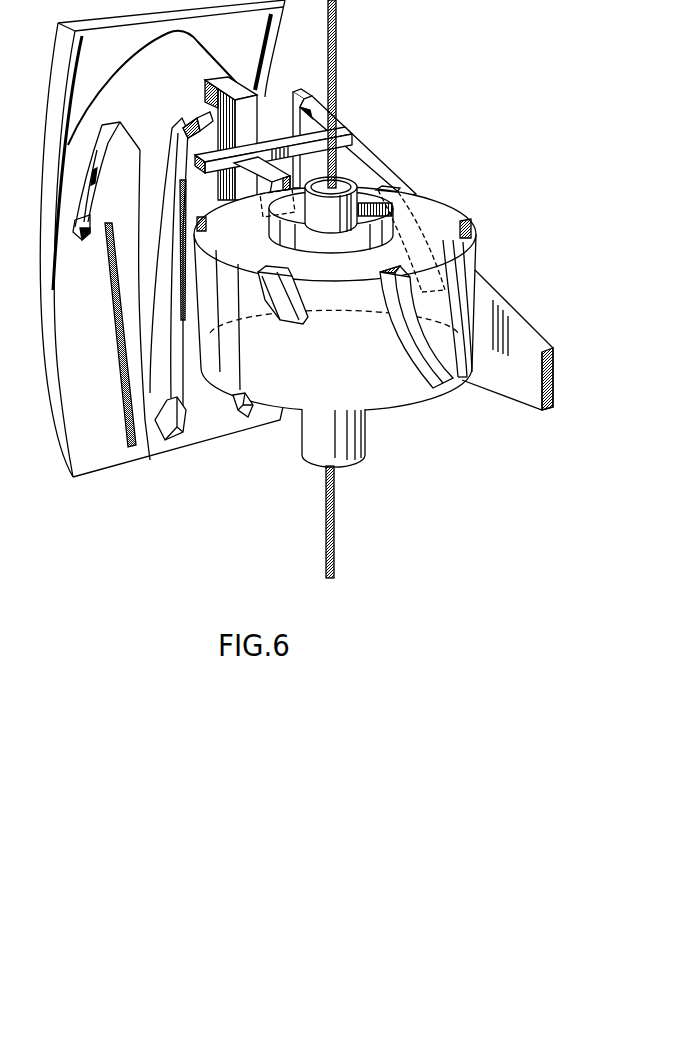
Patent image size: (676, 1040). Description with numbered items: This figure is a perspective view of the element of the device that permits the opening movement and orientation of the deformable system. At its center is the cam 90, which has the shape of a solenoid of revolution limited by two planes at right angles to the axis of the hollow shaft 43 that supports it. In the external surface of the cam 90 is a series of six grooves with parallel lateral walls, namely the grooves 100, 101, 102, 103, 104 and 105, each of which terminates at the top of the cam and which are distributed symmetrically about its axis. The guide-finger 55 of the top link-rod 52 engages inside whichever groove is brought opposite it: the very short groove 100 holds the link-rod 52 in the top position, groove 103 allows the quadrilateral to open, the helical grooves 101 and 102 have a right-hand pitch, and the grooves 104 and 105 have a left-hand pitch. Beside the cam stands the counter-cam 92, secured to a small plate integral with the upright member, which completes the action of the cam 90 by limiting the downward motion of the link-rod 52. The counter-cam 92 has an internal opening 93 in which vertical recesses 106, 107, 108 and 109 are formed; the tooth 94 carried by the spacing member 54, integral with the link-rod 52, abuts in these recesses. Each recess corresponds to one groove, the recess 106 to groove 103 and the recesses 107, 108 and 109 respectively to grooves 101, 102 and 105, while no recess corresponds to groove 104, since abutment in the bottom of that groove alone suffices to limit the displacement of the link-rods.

The counter-cam 92 is at (253, 33).
The internal opening 93 is at (128, 98).
The tooth 94 is at (212, 100).
The spacing member 54 is at (256, 116).
The guide-finger 55 is at (280, 168).
The link-rod 52 is at (352, 146).
The hollow shaft 43 is at (317, 457).
The recess 108 is at (196, 124).
The recess 109 is at (82, 208).
The recess 106 is at (177, 404).
The recess 107 is at (238, 404).
The groove 105 is at (413, 193).
The groove 100 is at (472, 230).
The groove 104 is at (264, 210).
The groove 103 is at (206, 226).
The groove 102 is at (268, 272).
The groove 101 is at (392, 298).
The cam 90 is at (371, 394).